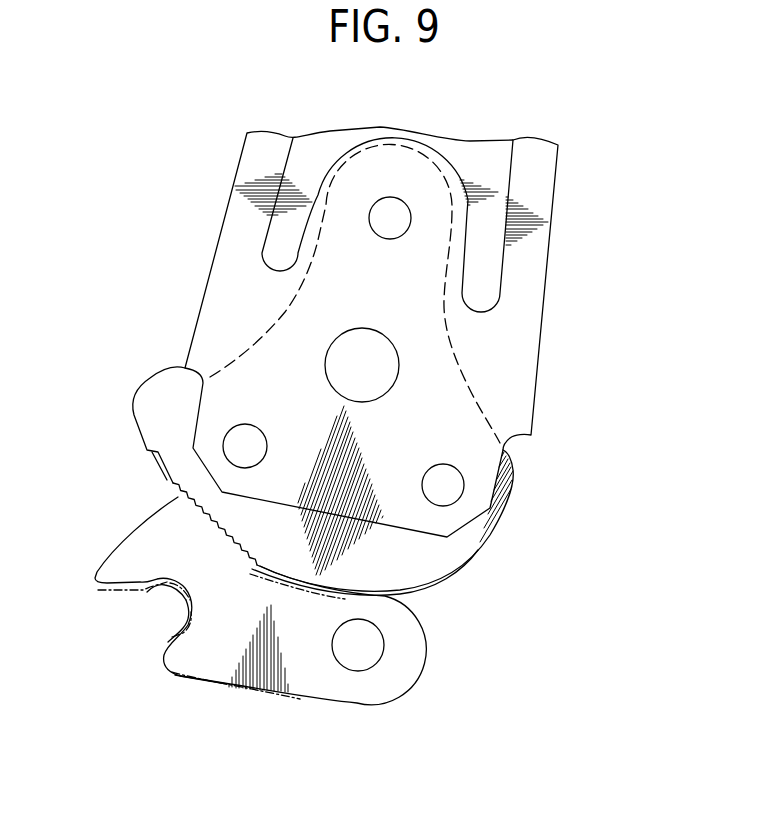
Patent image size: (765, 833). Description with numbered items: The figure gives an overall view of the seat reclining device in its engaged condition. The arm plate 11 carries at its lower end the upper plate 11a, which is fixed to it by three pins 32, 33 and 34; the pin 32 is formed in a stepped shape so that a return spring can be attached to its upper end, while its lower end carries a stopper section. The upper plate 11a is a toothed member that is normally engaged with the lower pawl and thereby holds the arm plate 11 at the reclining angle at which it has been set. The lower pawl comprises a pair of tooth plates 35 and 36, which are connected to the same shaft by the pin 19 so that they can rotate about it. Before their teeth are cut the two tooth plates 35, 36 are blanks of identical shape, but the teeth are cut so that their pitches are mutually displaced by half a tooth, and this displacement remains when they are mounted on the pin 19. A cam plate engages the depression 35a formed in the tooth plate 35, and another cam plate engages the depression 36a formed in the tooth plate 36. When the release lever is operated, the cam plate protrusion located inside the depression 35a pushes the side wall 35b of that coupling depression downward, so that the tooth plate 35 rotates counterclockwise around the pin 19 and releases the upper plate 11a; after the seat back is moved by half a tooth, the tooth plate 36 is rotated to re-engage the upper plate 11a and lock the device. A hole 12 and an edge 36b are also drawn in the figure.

The arm plate 11 is at (543, 198).
The upper plate 11a is at (465, 547).
The pivot hole 12 is at (399, 375).
The pin 19 is at (381, 648).
The pin 32 is at (410, 222).
The pin 33 is at (267, 446).
The pin 34 is at (468, 467).
The tooth plate 35 is at (405, 618).
The depression 35a is at (153, 597).
The side wall 35b is at (163, 637).
The tooth plate 36 is at (93, 579).
The depression 36a is at (177, 590).
The pawl edge 36b is at (172, 637).